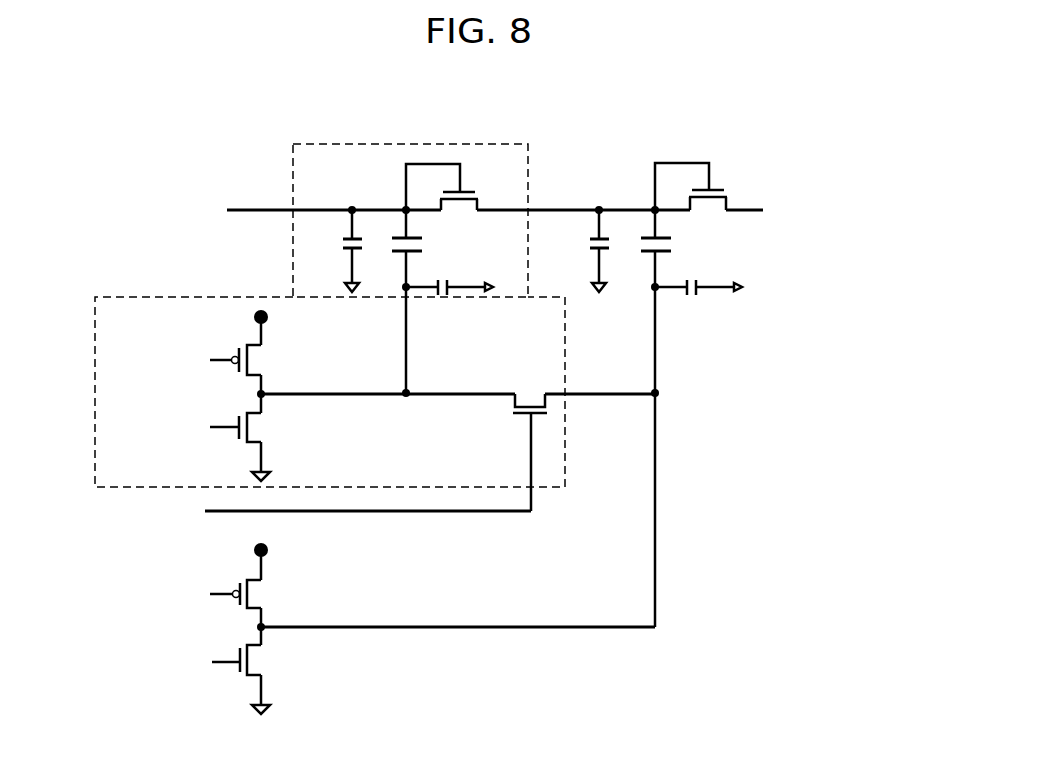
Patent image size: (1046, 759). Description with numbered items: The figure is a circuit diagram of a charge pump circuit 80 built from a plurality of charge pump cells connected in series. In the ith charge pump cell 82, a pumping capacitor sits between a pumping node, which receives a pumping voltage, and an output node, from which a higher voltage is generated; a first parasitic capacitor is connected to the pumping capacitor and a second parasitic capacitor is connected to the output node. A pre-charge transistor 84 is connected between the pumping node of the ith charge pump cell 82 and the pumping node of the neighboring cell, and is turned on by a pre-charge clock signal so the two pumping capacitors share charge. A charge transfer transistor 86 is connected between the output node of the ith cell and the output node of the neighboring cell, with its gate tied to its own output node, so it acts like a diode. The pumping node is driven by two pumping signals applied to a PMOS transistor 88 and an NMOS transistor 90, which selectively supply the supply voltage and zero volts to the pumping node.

The charge pump circuit 80 is at (775, 135).
The ith charge pump cell 82 is at (411, 145).
The pre-charge transistor 84 is at (530, 439).
The charge transfer transistor 86 is at (442, 198).
The PMOS transistor 88 is at (248, 360).
The NMOS transistor 90 is at (248, 427).